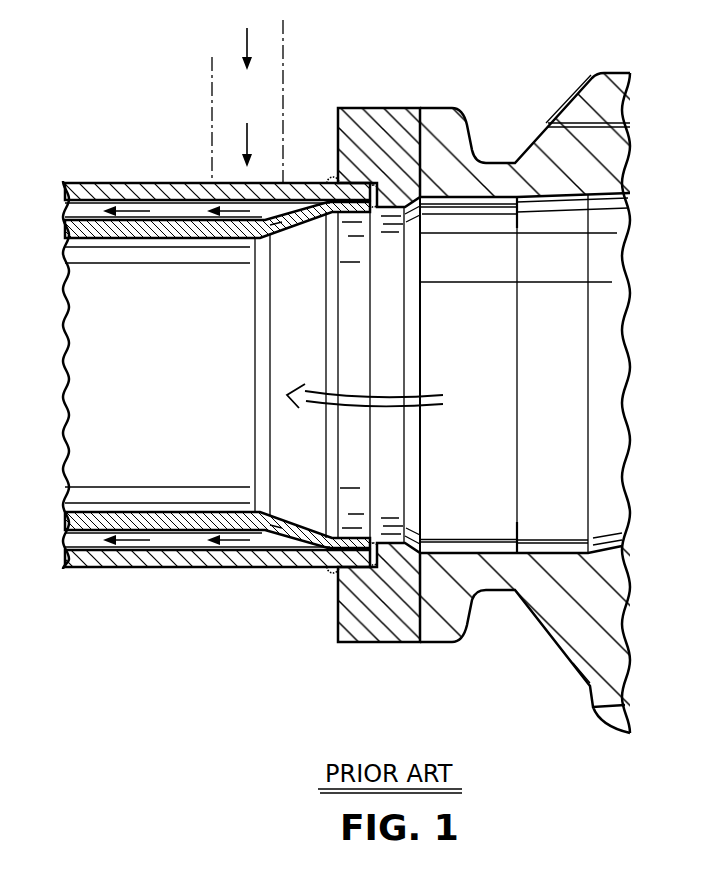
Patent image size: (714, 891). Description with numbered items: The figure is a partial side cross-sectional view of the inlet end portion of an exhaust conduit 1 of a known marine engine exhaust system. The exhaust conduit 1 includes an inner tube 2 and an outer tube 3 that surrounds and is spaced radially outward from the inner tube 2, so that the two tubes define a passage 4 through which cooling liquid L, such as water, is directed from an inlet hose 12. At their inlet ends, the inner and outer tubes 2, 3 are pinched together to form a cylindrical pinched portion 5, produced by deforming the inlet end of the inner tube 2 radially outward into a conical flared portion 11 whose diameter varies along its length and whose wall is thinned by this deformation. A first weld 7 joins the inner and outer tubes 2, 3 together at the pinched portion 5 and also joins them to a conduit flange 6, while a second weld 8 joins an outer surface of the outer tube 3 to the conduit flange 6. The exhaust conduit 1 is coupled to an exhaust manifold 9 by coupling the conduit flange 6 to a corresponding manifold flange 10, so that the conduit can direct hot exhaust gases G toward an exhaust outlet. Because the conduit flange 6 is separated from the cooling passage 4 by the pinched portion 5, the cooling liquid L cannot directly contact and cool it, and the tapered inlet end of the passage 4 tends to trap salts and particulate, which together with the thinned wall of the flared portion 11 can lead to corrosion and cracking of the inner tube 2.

The exhaust conduit 1 is at (83, 184).
The inner tube 2 is at (96, 238).
The outer tube 3 is at (167, 183).
The passage 4 is at (73, 211).
The pinched portion 5 is at (355, 214).
The conduit flange 6 is at (375, 108).
The first weld 7 is at (378, 208).
The second weld 8 is at (327, 180).
The exhaust manifold 9 is at (571, 88).
The manifold flange 10 is at (437, 108).
The conical flared portion 11 is at (293, 235).
The inlet hose 12 is at (210, 72).
The cooling liquid L is at (250, 33).
The exhaust gases G is at (387, 398).